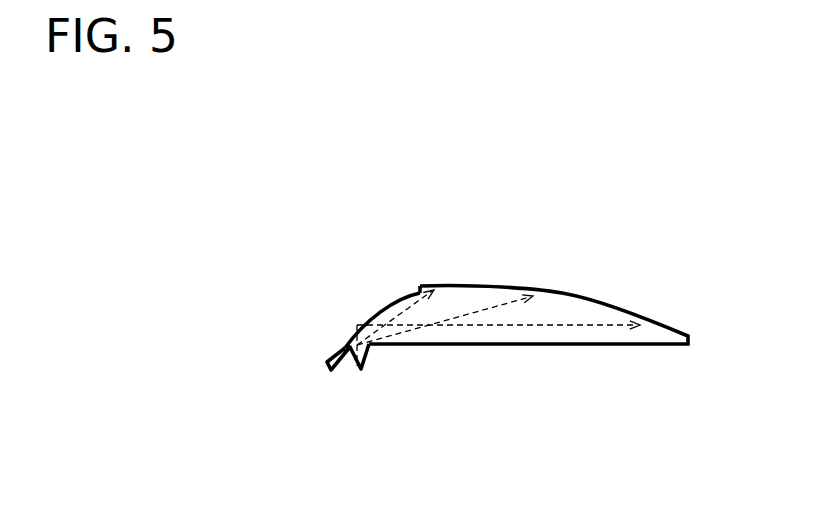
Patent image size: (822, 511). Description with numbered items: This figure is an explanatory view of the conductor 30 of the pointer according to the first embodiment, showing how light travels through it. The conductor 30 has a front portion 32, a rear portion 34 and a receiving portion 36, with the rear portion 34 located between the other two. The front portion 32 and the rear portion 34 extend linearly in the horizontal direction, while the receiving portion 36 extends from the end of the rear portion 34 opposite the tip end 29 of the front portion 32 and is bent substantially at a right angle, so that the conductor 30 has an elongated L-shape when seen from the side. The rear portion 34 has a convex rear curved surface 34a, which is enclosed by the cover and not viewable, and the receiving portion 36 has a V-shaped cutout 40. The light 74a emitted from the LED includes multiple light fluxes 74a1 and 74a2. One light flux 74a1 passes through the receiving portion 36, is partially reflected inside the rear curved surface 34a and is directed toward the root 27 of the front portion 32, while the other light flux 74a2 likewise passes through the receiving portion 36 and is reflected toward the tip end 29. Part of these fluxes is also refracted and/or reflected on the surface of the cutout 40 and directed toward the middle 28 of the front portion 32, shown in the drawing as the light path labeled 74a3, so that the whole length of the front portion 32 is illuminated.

The conductor 30 is at (617, 119).
The front portion 32 is at (590, 217).
The rear portion 34 is at (343, 230).
The rear curved surface 34a is at (373, 312).
The receiving portion 36 is at (303, 363).
The cutout 40 is at (343, 348).
The root 27 is at (435, 283).
The middle 28 is at (567, 293).
The tip end 29 is at (668, 325).
The light 74a is at (340, 400).
The one light flux 74a1 is at (337, 380).
The other light flux 74a2 is at (358, 377).
The third air flow 74a3 is at (413, 335).